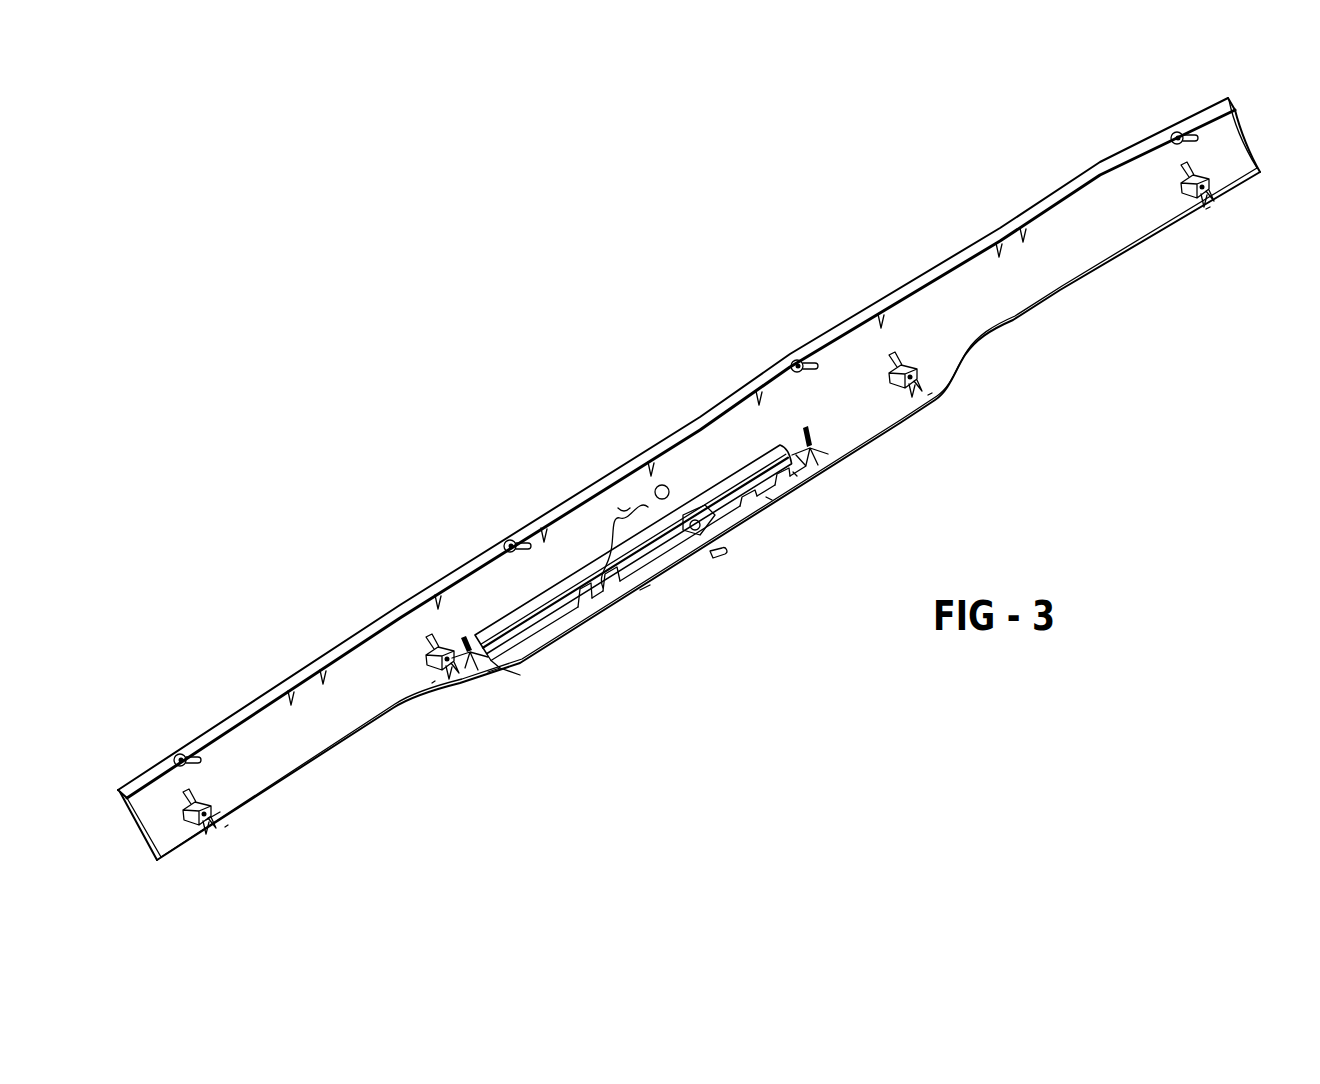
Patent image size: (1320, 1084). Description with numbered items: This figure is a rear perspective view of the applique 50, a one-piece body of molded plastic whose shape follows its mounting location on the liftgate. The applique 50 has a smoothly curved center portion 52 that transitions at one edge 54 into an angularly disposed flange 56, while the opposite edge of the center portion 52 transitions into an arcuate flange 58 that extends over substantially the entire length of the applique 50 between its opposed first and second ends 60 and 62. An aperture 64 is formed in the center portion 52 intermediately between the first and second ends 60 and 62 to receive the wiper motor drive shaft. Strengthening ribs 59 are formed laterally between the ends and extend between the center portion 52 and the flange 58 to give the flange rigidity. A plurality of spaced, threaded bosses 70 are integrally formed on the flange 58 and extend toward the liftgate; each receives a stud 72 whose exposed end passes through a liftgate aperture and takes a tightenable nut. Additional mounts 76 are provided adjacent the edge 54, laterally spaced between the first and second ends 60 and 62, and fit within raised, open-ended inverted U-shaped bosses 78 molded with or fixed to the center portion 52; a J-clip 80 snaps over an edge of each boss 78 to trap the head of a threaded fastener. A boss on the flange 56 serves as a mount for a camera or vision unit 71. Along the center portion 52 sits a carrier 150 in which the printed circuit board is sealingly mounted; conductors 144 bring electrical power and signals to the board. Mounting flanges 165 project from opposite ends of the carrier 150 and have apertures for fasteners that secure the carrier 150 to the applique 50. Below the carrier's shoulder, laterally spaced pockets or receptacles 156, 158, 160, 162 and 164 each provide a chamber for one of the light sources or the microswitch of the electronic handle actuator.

The applique 50 is at (422, 388).
The center portion 52 is at (320, 738).
The edge 54 is at (300, 770).
The angularly disposed flange 56 is at (497, 677).
The arcuate flange 58 is at (388, 604).
The strengthening ribs 59 is at (1028, 235).
The first end 60 is at (130, 830).
The second end 62 is at (1240, 130).
The aperture 64 is at (661, 484).
The bosses 70 is at (1168, 138).
The camera or vision unit 71 is at (622, 522).
The stud 72 is at (1189, 140).
The mounts 76 is at (1210, 214).
The inverted U-shaped bosses 78 is at (1212, 184).
The J-clip 80 is at (222, 807).
The conductors 144 is at (620, 505).
The carrier 150 is at (560, 630).
The pocket or receptacle 156 is at (795, 478).
The pocket or receptacle 158 is at (772, 503).
The pocket or receptacle 160 is at (650, 592).
The pocket or receptacle 162 is at (612, 590).
The pocket or receptacle 164 is at (522, 677).
The mounting flanges 165 is at (795, 450).